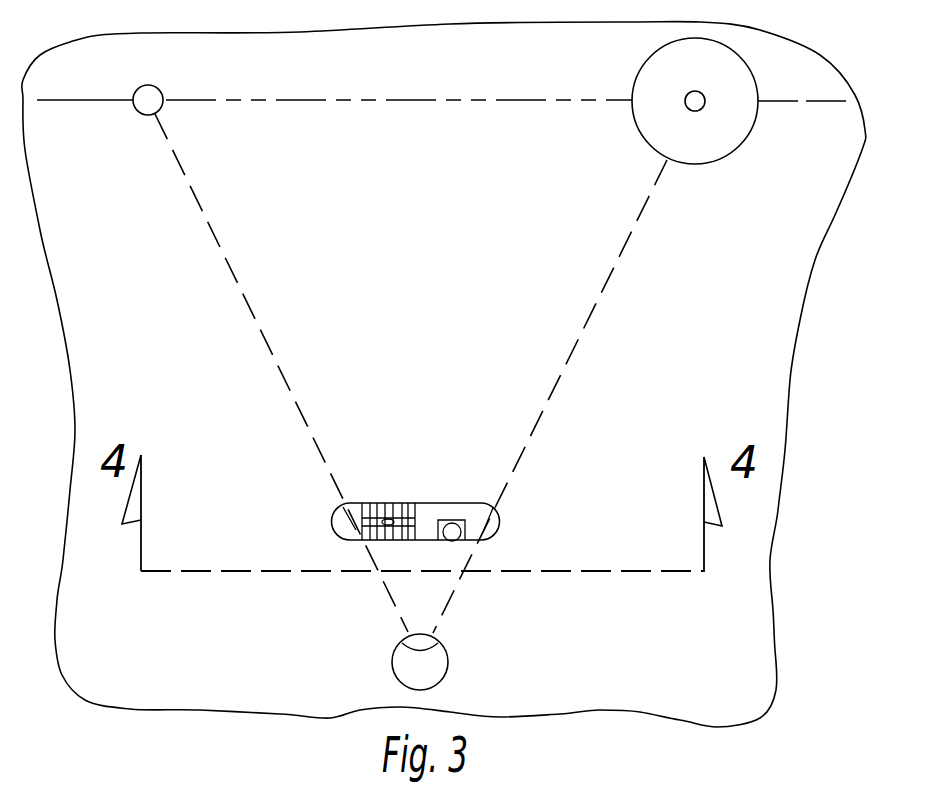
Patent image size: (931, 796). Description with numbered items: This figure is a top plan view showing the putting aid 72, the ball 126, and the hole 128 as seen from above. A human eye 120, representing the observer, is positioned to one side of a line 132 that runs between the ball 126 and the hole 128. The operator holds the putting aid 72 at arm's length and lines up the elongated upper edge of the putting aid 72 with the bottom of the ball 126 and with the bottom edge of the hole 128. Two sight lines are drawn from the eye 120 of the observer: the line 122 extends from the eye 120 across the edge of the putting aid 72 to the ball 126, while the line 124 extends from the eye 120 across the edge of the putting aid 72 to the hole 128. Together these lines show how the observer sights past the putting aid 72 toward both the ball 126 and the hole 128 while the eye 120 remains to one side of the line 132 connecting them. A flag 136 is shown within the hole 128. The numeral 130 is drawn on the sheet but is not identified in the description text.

The putting aid 72 is at (320, 505).
The human eye 120 is at (448, 662).
The line 122 is at (222, 250).
The line 124 is at (619, 257).
The ball 126 is at (140, 92).
The hole 128 is at (640, 72).
The body of patient 130 is at (410, 69).
The line 132 is at (352, 100).
The flag 136 is at (702, 94).